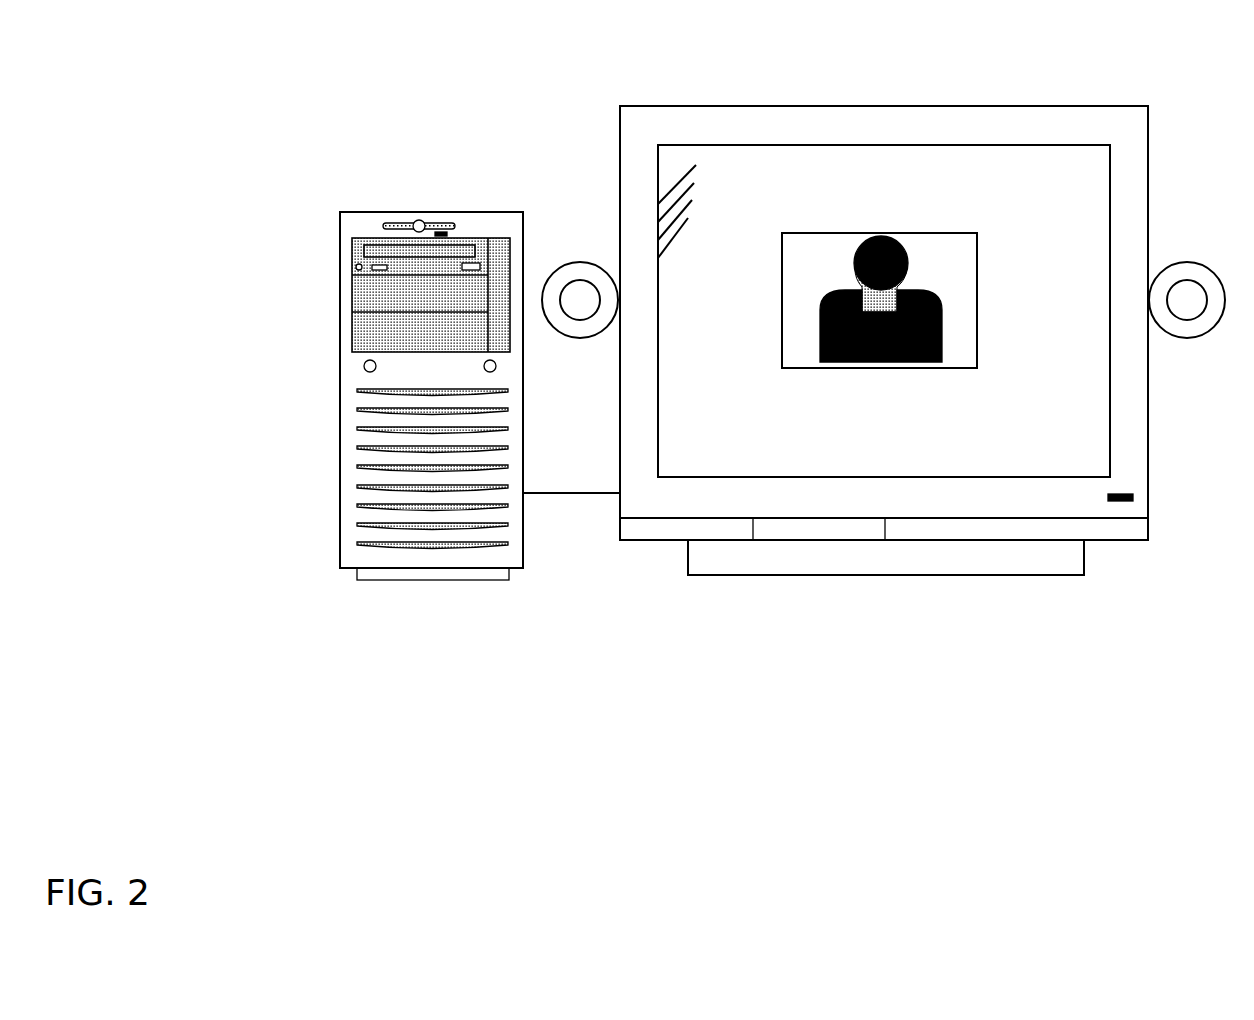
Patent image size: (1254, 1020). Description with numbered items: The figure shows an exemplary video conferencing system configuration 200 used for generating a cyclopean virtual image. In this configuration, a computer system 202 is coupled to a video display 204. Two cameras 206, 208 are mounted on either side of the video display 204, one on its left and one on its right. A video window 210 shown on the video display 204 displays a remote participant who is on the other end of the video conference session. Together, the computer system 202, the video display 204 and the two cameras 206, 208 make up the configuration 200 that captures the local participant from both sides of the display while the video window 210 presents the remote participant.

The video conferencing system configuration 200 is at (323, 65).
The computer system 202 is at (341, 535).
The video display 204 is at (620, 538).
The camera 206 is at (566, 262).
The camera 208 is at (1185, 262).
The video window 210 is at (873, 232).